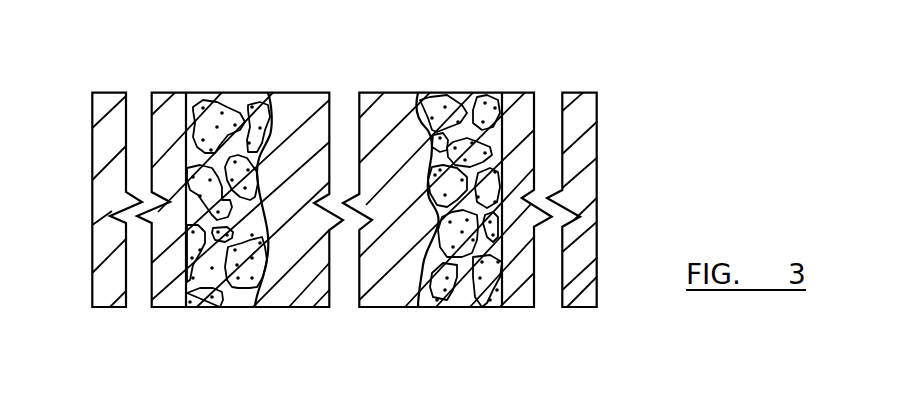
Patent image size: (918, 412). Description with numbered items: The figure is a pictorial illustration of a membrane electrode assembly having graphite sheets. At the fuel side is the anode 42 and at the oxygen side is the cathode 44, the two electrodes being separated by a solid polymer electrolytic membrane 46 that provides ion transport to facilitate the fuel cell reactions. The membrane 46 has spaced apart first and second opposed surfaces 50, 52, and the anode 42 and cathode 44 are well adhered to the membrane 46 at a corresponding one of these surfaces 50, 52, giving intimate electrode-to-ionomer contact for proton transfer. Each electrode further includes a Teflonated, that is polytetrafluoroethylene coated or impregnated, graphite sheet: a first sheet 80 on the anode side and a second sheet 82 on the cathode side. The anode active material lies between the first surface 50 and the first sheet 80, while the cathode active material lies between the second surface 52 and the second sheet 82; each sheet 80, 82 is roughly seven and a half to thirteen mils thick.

The anode 42 is at (240, 196).
The cathode 44 is at (447, 196).
The solid polymer electrolytic membrane 46 is at (375, 93).
The first surface 50 is at (268, 135).
The second surface 52 is at (432, 137).
The first Teflonated graphite sheet 80 is at (166, 93).
The second Teflonated graphite sheet 82 is at (578, 93).